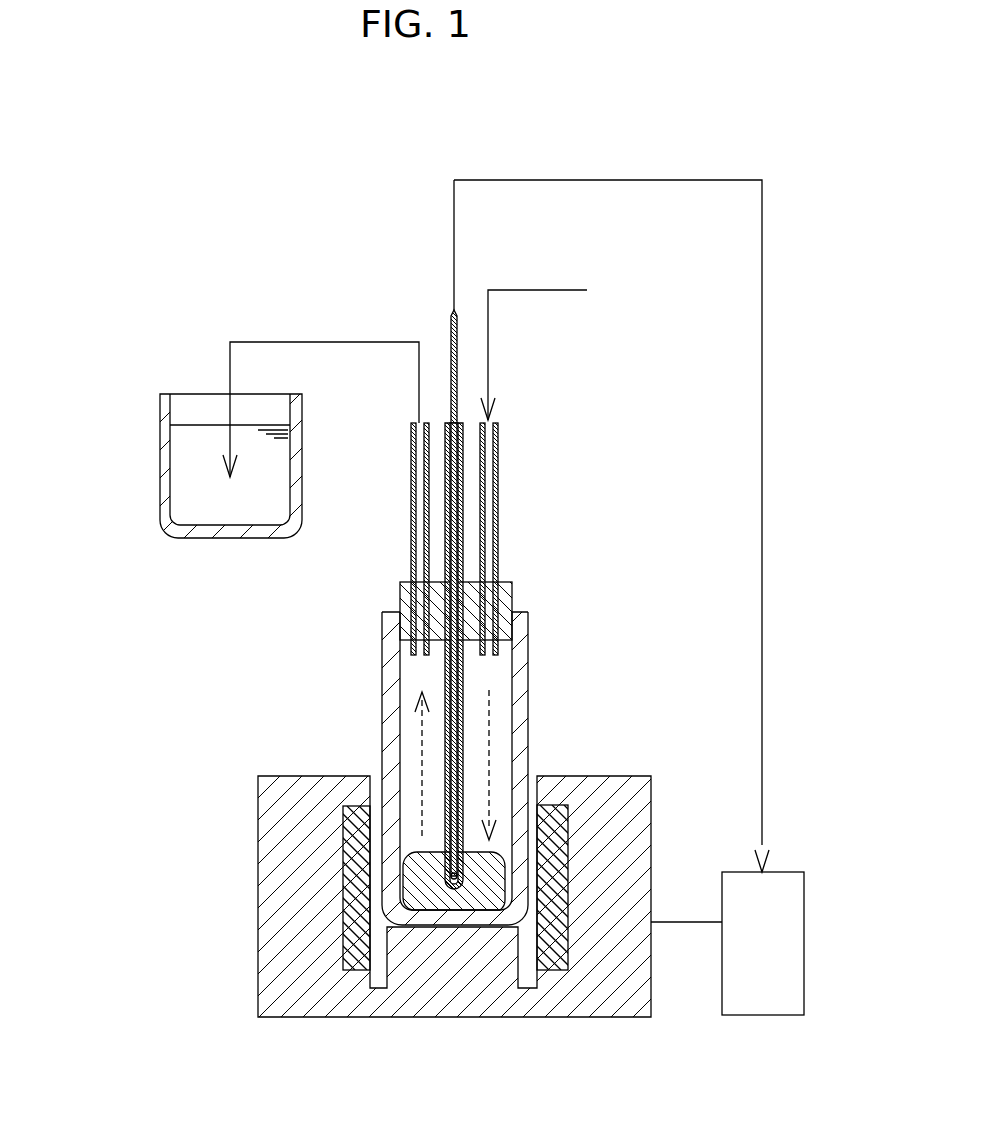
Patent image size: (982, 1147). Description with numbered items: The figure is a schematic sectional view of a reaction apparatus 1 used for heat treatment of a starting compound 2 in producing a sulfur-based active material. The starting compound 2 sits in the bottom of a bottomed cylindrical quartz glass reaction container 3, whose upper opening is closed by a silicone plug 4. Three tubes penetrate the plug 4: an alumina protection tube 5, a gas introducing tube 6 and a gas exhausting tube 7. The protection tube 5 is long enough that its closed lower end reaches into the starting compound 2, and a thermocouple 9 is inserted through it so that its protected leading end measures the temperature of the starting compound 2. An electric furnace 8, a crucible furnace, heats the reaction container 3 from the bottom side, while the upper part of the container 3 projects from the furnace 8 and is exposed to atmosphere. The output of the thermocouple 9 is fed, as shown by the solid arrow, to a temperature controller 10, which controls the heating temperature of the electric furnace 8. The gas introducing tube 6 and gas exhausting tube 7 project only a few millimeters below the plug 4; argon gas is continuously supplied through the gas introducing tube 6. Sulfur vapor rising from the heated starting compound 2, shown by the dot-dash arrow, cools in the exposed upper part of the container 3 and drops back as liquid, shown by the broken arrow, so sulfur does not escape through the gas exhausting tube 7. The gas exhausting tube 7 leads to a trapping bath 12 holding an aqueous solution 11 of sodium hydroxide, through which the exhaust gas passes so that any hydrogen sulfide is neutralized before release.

The reaction apparatus 1 is at (257, 210).
The starting compound 2 is at (472, 892).
The reaction container 3 is at (523, 658).
The silicone plug 4 is at (510, 590).
The alumina protection tube 5 is at (462, 737).
The gas introducing tube 6 is at (497, 480).
The gas exhausting tube 7 is at (412, 542).
The electric furnace 8 is at (260, 895).
The thermocouple 9 is at (452, 335).
The temperature controller 10 is at (760, 1005).
The aqueous solution of sodium hydroxide 11 is at (217, 513).
The trapping bath 12 is at (160, 477).